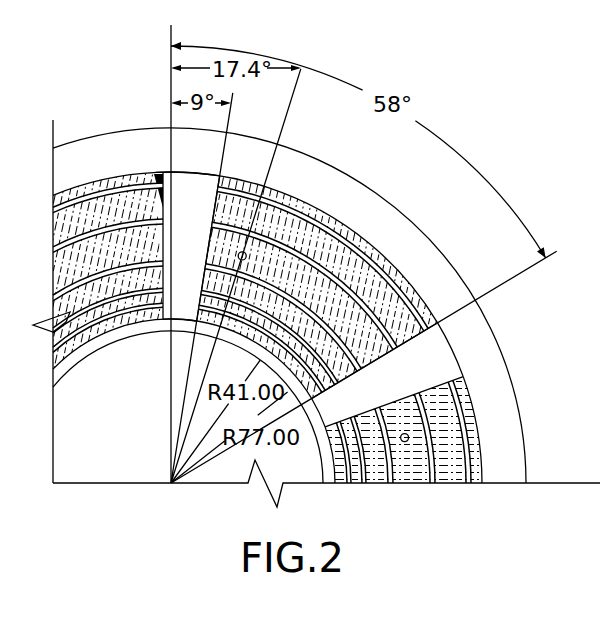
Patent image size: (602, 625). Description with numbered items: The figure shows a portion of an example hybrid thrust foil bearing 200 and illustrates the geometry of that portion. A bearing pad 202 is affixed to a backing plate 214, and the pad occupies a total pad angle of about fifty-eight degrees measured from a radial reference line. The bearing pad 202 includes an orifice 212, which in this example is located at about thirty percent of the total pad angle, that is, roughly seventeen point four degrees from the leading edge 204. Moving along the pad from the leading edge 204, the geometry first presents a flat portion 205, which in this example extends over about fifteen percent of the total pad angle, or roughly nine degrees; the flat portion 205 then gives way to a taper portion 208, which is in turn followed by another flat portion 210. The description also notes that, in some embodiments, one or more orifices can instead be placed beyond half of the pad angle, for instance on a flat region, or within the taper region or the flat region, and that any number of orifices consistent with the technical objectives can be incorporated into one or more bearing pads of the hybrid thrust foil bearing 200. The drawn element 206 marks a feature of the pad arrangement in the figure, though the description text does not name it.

The hybrid thrust foil bearing 200 is at (300, 312).
The bearing pad 202 is at (327, 215).
The leading edge 204 is at (158, 197).
The flat portion 205 is at (187, 203).
The slot 206 is at (448, 312).
The taper portion 208 is at (242, 251).
The flat portion 210 is at (370, 277).
The orifice 212 is at (312, 252).
The backing plate 214 is at (495, 335).